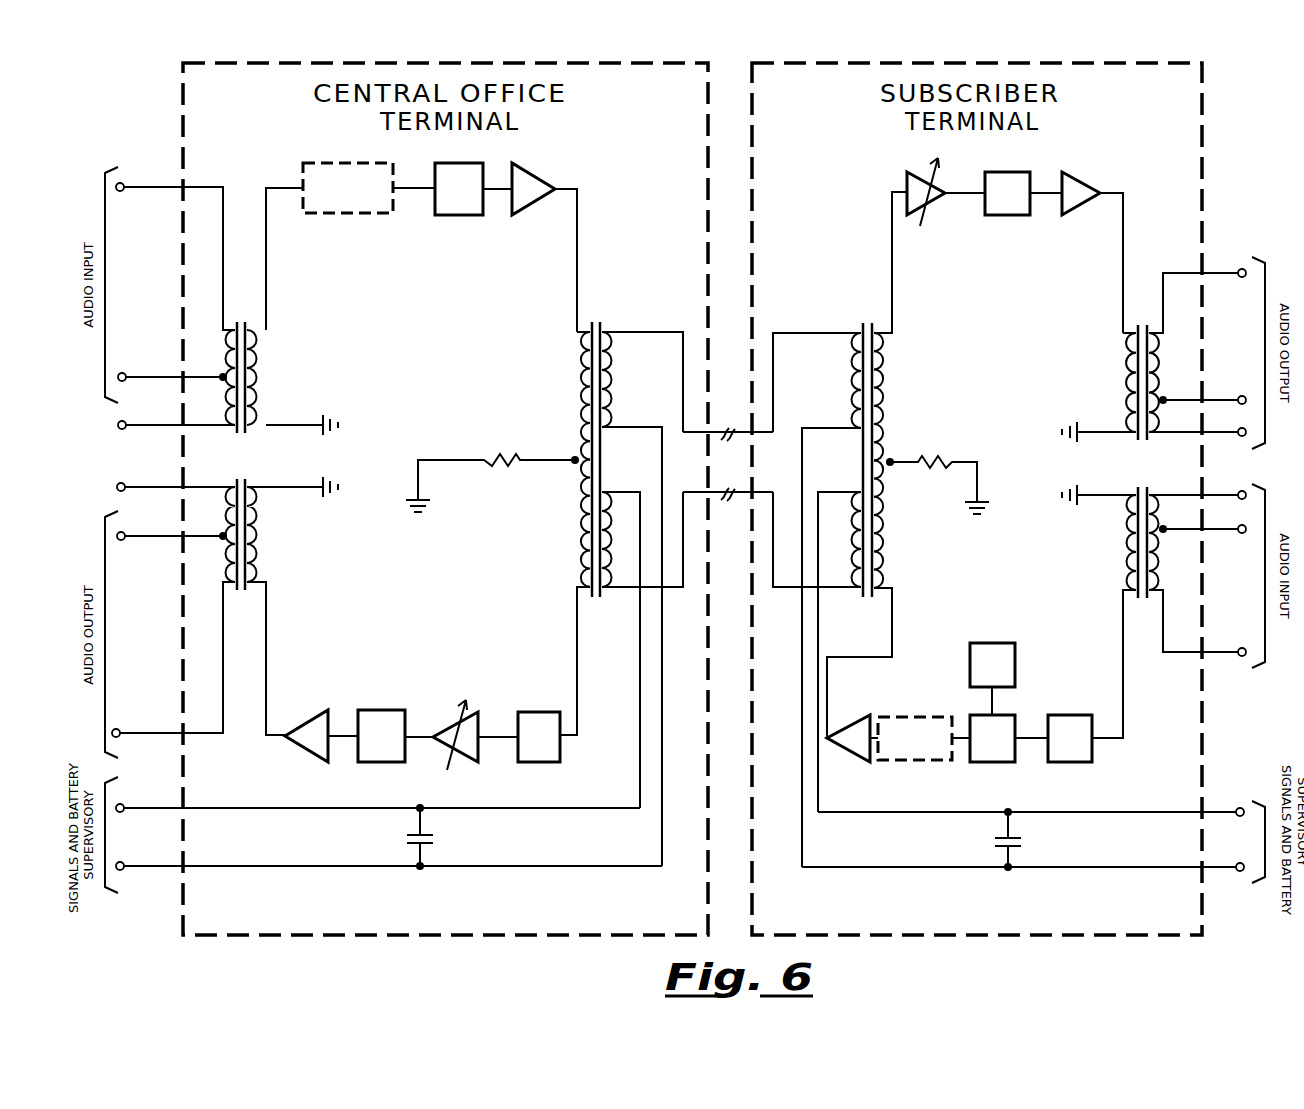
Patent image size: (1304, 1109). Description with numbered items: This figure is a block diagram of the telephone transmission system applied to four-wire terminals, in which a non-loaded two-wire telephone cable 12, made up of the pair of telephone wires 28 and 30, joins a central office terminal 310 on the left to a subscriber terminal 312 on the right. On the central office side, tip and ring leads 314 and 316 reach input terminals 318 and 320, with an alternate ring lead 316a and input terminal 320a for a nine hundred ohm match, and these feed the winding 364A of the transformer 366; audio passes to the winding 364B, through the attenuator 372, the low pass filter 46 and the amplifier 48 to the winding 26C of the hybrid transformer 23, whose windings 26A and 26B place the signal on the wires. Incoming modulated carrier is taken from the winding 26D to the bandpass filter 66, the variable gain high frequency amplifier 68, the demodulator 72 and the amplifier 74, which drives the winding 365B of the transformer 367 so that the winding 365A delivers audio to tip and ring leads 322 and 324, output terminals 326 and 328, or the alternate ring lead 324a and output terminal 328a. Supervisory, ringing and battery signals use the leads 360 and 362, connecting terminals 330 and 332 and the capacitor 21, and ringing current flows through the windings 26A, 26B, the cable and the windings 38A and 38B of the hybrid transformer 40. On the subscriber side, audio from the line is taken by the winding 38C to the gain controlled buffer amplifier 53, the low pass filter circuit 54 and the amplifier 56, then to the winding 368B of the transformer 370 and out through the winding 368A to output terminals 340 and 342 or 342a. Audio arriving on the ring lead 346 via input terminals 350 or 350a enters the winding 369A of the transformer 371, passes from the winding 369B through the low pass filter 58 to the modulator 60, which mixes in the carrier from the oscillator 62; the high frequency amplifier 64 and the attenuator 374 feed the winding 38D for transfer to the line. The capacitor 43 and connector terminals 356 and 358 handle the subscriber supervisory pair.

The telephone cable 12 is at (768, 490).
The capacitor 21 is at (434, 840).
The hybrid transformer 23 is at (630, 296).
The winding 26A is at (618, 380).
The winding 26B is at (625, 520).
The winding 26C is at (580, 392).
The winding 26D is at (578, 510).
The telephone wire 28 is at (740, 430).
The telephone wire 30 is at (740, 494).
The winding 38A is at (850, 393).
The winding 38B is at (848, 530).
The winding 38C is at (888, 396).
The winding 38D is at (885, 545).
The hybrid transformer 40 is at (866, 322).
The capacitor 43 is at (1022, 843).
The low pass filter 46 is at (447, 215).
The amplifier 48 is at (540, 170).
The gain controlled buffer amplifier 53 is at (908, 178).
The low pass filter circuit 54 is at (1003, 172).
The amplifier 56 is at (1078, 172).
The low pass filter 58 is at (1068, 763).
The modulator 60 is at (992, 763).
The oscillator 62 is at (987, 643).
The high frequency amplifier 64 is at (850, 752).
The bandpass filter 66 is at (532, 762).
The variable gain high frequency amplifier 68 is at (457, 762).
The demodulator 72 is at (375, 762).
The amplifier 74 is at (300, 748).
The central office terminal 310 is at (183, 905).
The subscriber terminal 312 is at (1202, 145).
The tip lead 314 is at (193, 186).
The ring lead 316 is at (223, 374).
The ring lead 316a is at (223, 428).
The input terminal 318 is at (120, 183).
The input terminal 320 is at (122, 373).
The input terminal 320a is at (121, 424).
The tip lead 322 is at (200, 738).
The ring lead 324 is at (223, 539).
The alternate ring lead 324a is at (226, 486).
The output terminal 326 is at (117, 729).
The output terminal 328 is at (121, 541).
The alternate output terminal 328a is at (121, 483).
The connecting terminal 330 is at (120, 804).
The connecting terminal 332 is at (120, 862).
The output terminal 340 is at (1242, 269).
The output terminal 342 is at (1242, 396).
The output terminal 342a is at (1242, 437).
The ring lead 346 is at (1242, 657).
The input terminal 350 is at (1242, 533).
The input terminal 350a is at (1242, 491).
The connector terminal 356 is at (1240, 872).
The connector terminal 358 is at (1240, 808).
The lead 360 is at (218, 810).
The lead 362 is at (345, 867).
The winding 364A is at (226, 342).
The winding 364B is at (263, 373).
The winding 365A is at (226, 520).
The winding 365B is at (263, 522).
The transformer 366 is at (248, 322).
The transformer 367 is at (248, 587).
The winding 368A is at (1168, 372).
The winding 368B is at (1125, 393).
The winding 369A is at (1170, 560).
The winding 369B is at (1124, 522).
The transformer 370 is at (1133, 322).
The transformer 371 is at (1143, 600).
The attenuator 372 is at (358, 215).
The attenuator 374 is at (903, 716).